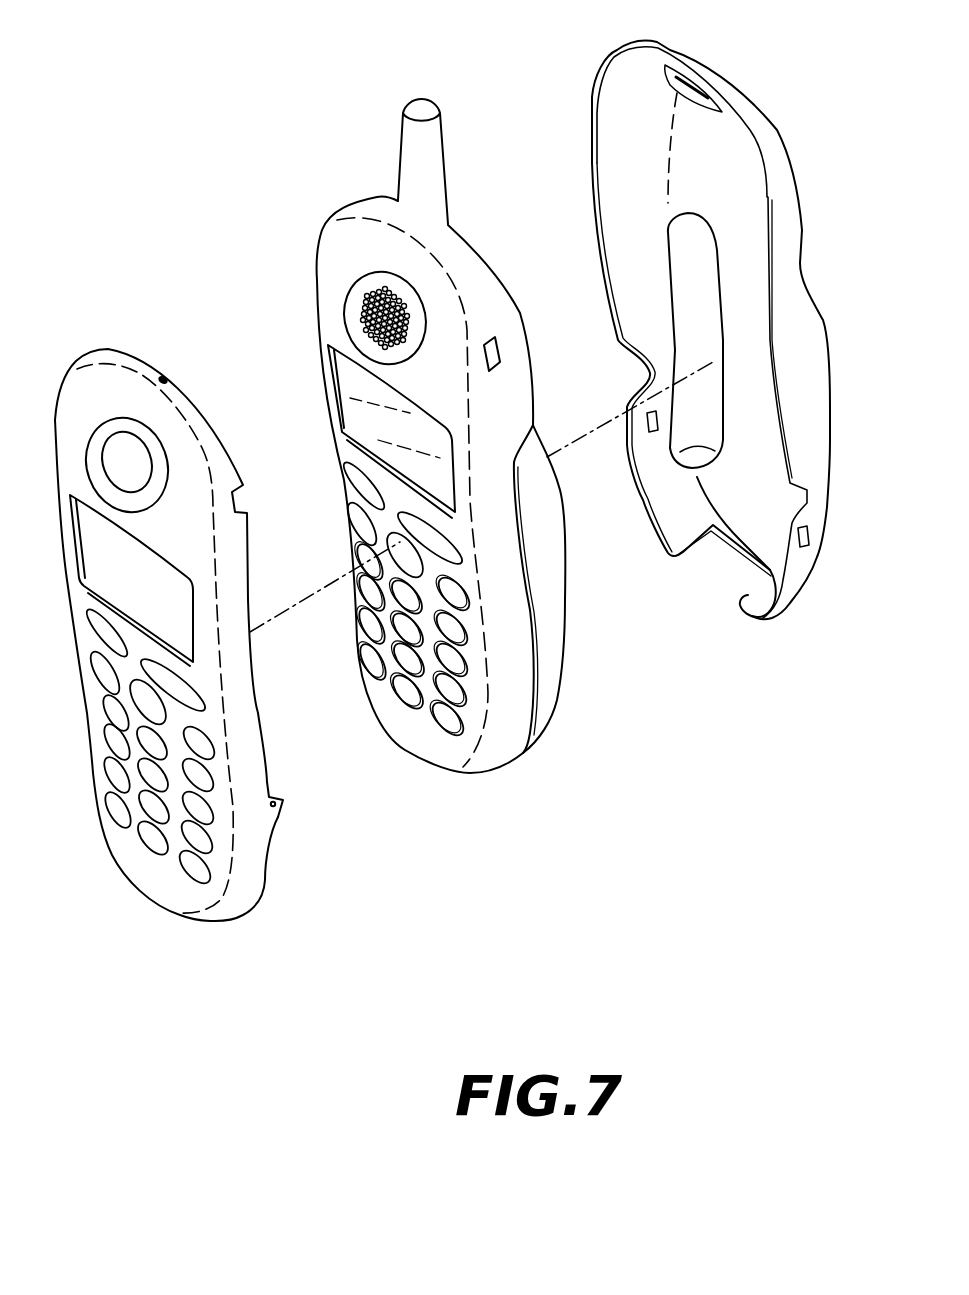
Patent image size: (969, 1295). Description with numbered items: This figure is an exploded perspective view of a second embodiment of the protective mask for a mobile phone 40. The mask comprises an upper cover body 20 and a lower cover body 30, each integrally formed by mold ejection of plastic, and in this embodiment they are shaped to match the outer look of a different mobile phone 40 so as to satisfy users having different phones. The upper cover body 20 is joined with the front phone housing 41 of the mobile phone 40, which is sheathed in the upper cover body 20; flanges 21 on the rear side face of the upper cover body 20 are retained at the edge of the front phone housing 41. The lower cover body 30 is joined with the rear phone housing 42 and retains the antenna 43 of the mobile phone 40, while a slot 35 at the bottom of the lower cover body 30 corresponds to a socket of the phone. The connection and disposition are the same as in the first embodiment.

The upper cover body 20 is at (216, 699).
The flanges 21 is at (277, 813).
The lower cover body 30 is at (711, 406).
The slot 35 is at (737, 548).
The mobile phone 40 is at (469, 452).
The front phone housing 41 is at (432, 767).
The rear phone housing 42 is at (550, 701).
The antenna 43 is at (423, 100).